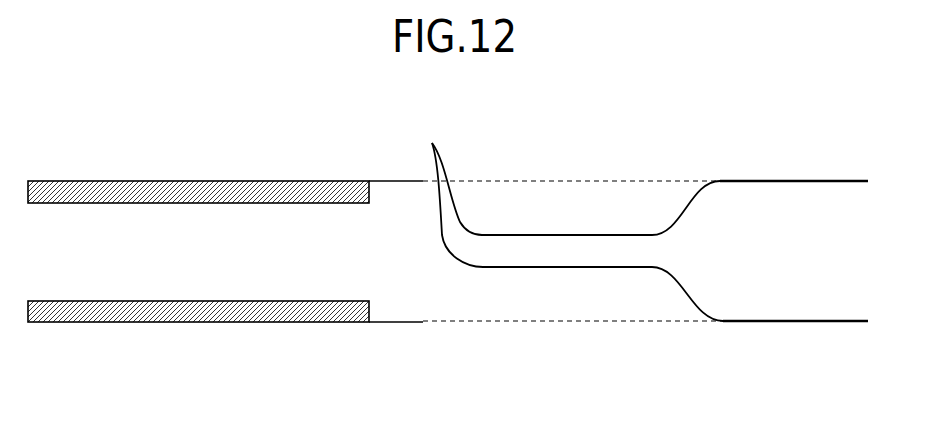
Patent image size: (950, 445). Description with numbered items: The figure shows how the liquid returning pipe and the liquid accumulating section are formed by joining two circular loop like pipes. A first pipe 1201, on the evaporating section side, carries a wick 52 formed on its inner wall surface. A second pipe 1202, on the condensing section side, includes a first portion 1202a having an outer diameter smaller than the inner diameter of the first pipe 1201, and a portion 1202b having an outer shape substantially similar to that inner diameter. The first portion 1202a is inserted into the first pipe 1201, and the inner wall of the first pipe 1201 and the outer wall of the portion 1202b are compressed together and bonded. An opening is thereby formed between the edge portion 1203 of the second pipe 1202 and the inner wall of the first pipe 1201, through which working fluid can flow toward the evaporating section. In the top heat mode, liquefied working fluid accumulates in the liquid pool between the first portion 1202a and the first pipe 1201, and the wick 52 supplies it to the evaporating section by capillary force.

The wick 52 is at (218, 310).
The first pipe 1201 is at (117, 330).
The second pipe 1202 is at (788, 326).
The first portion 1202a is at (485, 168).
The portion 1202b is at (868, 168).
The edge portion 1203 is at (566, 221).